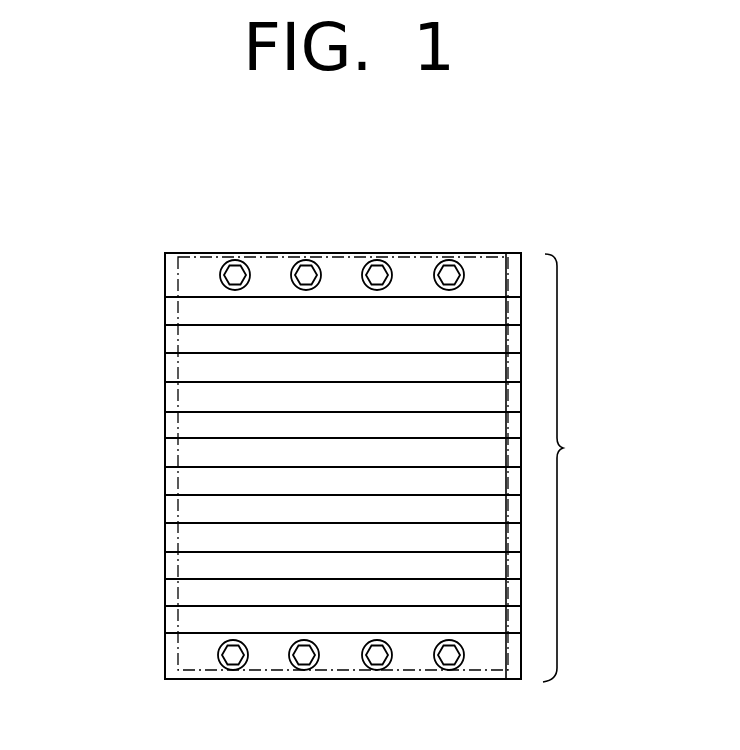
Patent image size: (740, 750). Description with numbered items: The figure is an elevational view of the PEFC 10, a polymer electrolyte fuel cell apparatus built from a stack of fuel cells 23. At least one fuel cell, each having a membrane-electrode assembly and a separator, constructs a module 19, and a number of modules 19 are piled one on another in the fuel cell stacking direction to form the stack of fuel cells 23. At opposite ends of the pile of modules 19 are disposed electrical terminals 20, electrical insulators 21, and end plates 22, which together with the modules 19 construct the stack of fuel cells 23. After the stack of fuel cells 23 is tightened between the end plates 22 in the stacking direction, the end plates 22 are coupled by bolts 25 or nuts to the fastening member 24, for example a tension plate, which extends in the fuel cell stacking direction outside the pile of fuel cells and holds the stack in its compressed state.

The PEFC 10 is at (466, 253).
The module 19 is at (174, 362).
The electrical terminals 20 is at (172, 340).
The electrical insulators 21 is at (172, 312).
The end plates 22 is at (172, 256).
The stack of fuel cells 23 is at (585, 468).
The fastening member 24 is at (160, 645).
The bolts 25 is at (240, 270).